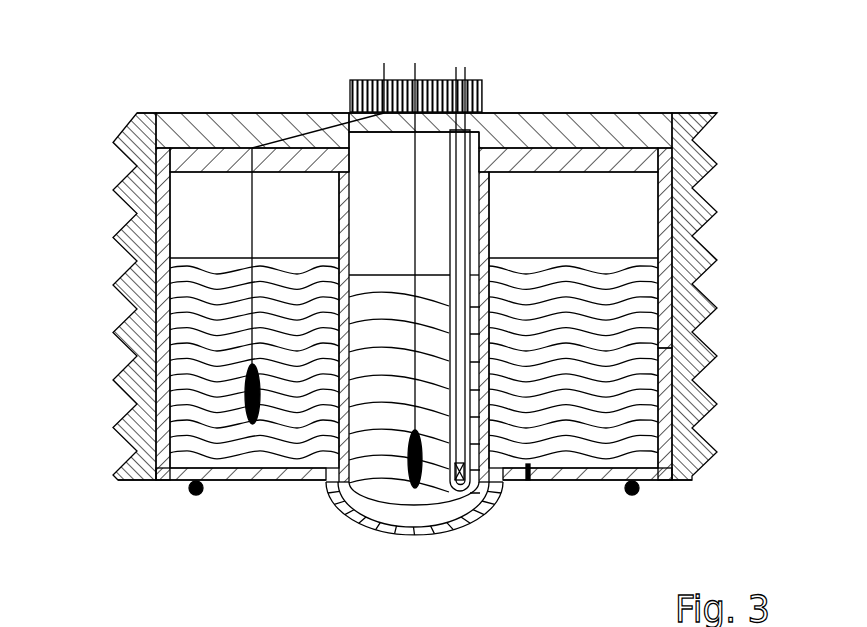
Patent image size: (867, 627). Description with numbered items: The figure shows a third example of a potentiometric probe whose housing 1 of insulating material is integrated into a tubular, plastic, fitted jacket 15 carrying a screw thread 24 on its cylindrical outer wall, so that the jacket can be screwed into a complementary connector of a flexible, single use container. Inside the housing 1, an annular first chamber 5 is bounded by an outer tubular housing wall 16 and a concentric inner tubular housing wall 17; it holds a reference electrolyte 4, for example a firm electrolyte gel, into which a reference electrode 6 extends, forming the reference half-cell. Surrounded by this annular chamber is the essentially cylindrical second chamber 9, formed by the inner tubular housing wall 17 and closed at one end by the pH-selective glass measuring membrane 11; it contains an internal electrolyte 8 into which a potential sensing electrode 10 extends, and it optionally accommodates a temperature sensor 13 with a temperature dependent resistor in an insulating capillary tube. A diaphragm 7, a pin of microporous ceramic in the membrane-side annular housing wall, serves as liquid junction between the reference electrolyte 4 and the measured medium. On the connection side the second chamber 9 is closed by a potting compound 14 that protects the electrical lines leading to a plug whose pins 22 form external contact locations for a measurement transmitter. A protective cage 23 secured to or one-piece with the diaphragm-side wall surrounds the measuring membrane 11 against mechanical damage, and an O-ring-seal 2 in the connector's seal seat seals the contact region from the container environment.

The housing 1 is at (665, 190).
The O-ring-seal 2 is at (632, 497).
The reference electrolyte 4 is at (638, 358).
The first chamber 5 is at (636, 228).
The reference electrode 6 is at (252, 424).
The diaphragm 7 is at (530, 482).
The internal electrolyte 8 is at (420, 498).
The second chamber 9 is at (473, 200).
The potential sensing electrode 10 is at (425, 480).
The measuring membrane 11 is at (381, 508).
The temperature sensor 13 is at (472, 489).
The potting compound 14 is at (228, 131).
The fitted jacket 15 is at (141, 130).
The outer tubular housing wall 16 is at (665, 415).
The inner tubular housing wall 17 is at (343, 446).
The pins 22 is at (459, 70).
The protective cage 23 is at (356, 517).
The screw thread 24 is at (120, 300).